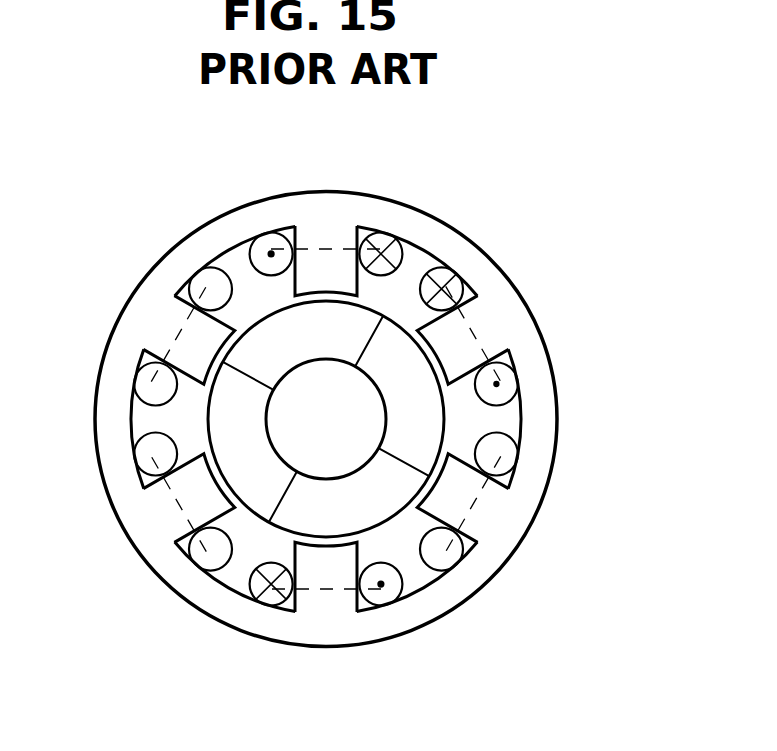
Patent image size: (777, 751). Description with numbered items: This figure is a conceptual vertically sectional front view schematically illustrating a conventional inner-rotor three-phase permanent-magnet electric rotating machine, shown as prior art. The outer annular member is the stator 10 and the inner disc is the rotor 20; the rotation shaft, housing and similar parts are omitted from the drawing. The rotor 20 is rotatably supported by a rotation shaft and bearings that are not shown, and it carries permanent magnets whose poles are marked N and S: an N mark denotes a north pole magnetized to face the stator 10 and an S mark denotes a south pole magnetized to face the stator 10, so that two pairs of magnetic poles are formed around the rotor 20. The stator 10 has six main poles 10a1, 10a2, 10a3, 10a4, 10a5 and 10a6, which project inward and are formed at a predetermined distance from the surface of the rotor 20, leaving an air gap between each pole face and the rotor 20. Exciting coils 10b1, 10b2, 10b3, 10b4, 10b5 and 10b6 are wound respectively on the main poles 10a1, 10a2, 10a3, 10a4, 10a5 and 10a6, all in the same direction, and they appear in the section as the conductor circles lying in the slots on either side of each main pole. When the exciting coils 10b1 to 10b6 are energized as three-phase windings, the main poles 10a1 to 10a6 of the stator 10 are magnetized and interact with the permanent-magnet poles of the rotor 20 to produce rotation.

The stator 10 is at (502, 267).
The rotor 20 is at (383, 308).
The main pole 10a1 is at (322, 238).
The main pole 10a2 is at (487, 333).
The main pole 10a3 is at (490, 503).
The main pole 10a4 is at (338, 603).
The main pole 10a5 is at (165, 502).
The main pole 10a6 is at (165, 326).
The exciting coil 10b1 is at (392, 248).
The exciting coil 10b2 is at (508, 377).
The exciting coil 10b3 is at (460, 553).
The exciting coil 10b4 is at (275, 592).
The exciting coil 10b5 is at (145, 455).
The exciting coil 10b6 is at (198, 284).